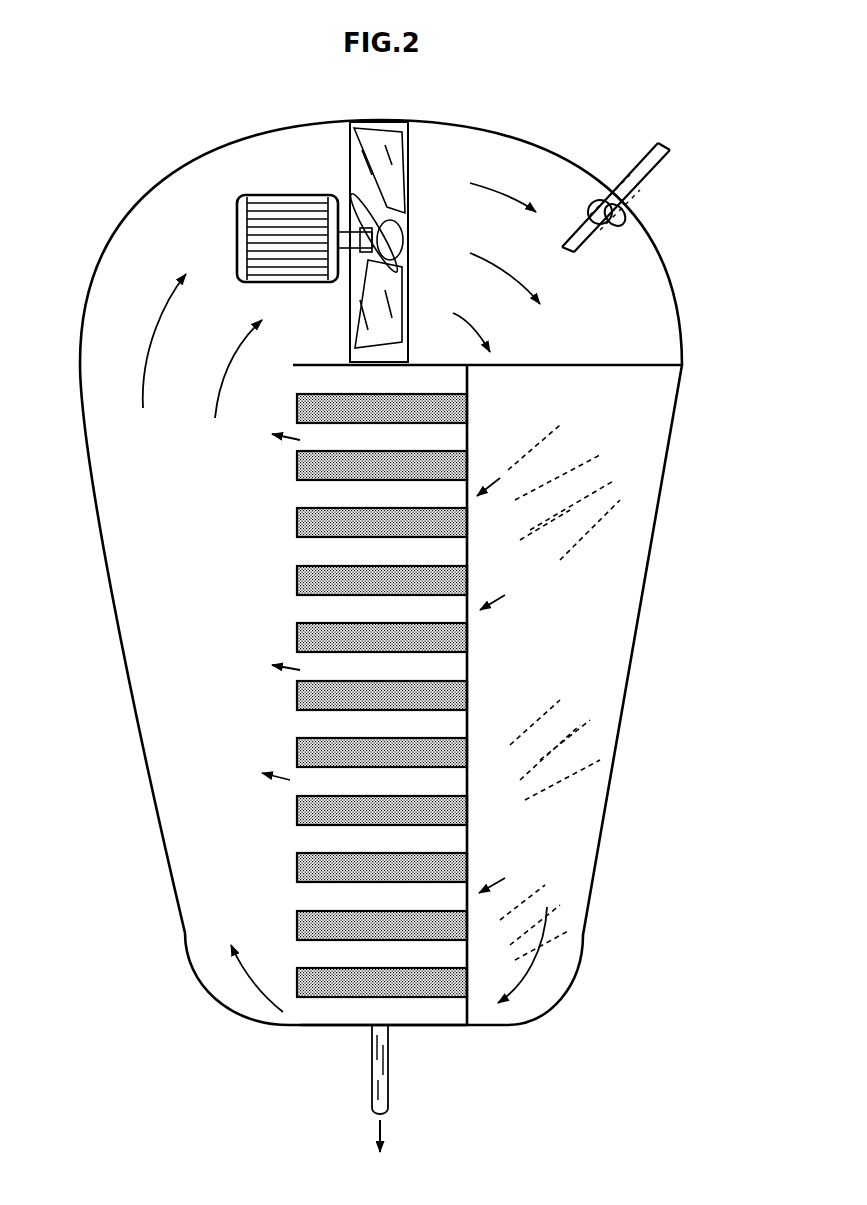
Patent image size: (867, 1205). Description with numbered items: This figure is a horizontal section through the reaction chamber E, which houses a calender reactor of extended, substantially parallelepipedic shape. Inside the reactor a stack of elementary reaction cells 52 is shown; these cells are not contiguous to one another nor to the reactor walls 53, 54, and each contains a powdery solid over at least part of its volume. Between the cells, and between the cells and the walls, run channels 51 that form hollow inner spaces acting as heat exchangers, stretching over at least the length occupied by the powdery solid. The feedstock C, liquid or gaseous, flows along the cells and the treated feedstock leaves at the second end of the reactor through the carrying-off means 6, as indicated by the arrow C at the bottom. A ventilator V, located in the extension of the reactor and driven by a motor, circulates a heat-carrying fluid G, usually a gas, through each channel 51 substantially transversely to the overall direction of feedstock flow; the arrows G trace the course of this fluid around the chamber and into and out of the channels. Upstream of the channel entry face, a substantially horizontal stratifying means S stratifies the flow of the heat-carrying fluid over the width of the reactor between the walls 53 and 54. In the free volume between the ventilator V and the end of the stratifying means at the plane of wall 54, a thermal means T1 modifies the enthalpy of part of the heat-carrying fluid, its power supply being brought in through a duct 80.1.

The reaction chamber E is at (130, 702).
The means for circulating the heat-carrying fluid V is at (422, 160).
The wall of the reactor 54 is at (330, 363).
The channel or hollow inner space (heat exchanger) 51 is at (303, 555).
The elementary reaction cell 52 is at (307, 587).
The wall of the reactor 53 is at (338, 1027).
The means for carrying off the treated feedstock 6 is at (383, 1079).
The feedstock C is at (392, 1143).
The duct 80.1 is at (652, 140).
The thermal means T1 is at (618, 206).
The means for stratifying the flow of heat-carrying fluid S is at (606, 608).
The heat-carrying fluid G is at (341, 597).